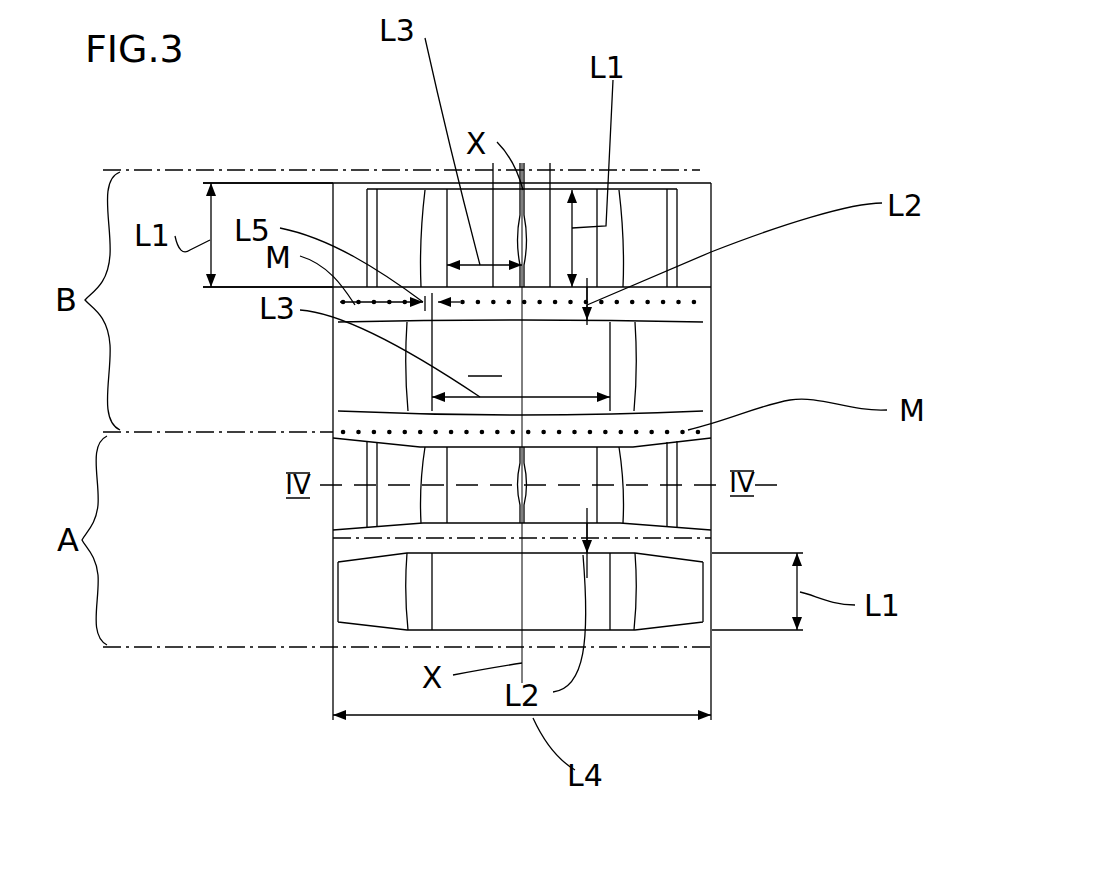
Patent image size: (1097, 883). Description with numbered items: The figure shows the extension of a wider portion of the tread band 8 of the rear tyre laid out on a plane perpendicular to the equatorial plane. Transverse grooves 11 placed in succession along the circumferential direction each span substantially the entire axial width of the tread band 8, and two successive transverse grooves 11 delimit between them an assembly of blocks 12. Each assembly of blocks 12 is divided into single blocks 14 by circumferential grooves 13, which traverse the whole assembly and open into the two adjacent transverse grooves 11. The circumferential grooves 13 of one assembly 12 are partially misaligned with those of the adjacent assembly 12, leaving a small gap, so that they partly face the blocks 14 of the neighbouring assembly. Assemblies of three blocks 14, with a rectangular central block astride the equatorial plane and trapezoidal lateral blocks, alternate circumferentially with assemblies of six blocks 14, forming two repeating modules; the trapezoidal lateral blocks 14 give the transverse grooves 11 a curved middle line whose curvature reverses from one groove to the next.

The tread band 8 is at (720, 307).
The transverse groove 11 is at (702, 296).
The assembly of blocks 12 is at (723, 208).
The circumferential groove 13 is at (393, 197).
The block 14 is at (460, 222).